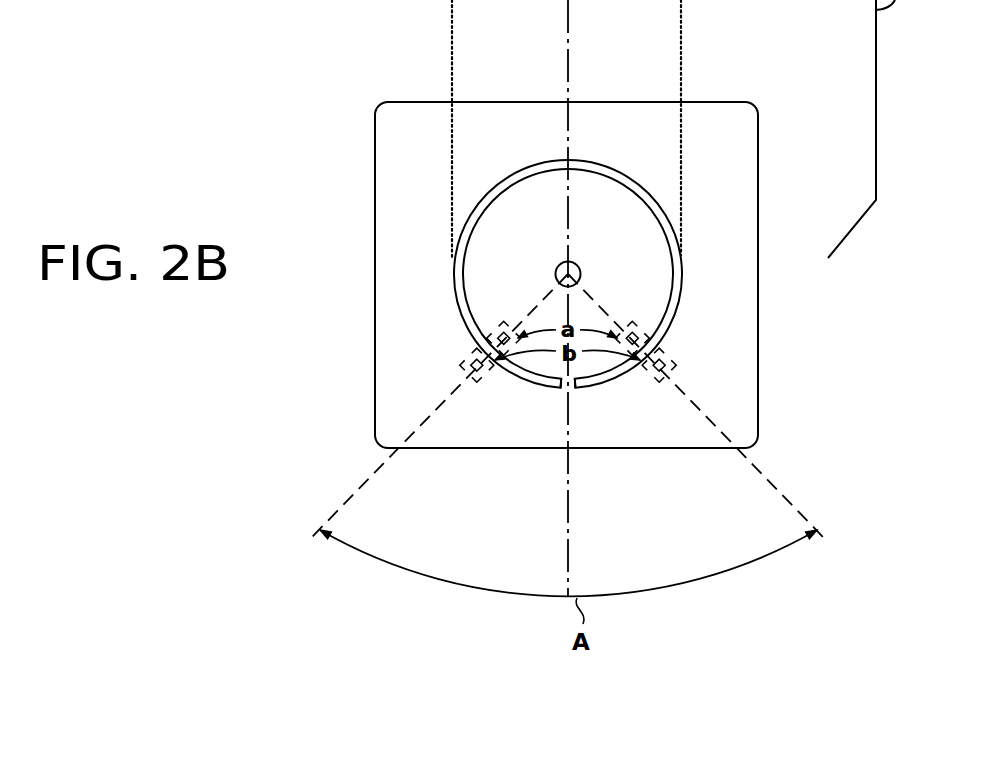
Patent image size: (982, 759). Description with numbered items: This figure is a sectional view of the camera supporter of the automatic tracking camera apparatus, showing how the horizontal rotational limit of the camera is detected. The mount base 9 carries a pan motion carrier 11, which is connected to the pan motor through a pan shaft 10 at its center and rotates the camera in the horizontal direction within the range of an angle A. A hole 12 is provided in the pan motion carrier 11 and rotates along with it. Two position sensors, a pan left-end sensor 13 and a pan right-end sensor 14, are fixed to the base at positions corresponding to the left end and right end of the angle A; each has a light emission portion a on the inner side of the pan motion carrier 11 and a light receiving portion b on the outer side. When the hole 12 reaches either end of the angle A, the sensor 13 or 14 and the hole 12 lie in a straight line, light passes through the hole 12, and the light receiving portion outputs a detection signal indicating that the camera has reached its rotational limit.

The mount base 9 is at (375, 127).
The pan shaft 10 is at (556, 273).
The pan motion carrier 11 is at (660, 205).
The hole 12 is at (569, 390).
The pan left-end (PLE) sensor 13 is at (465, 358).
The pan right-end (PRE) sensor 14 is at (670, 352).